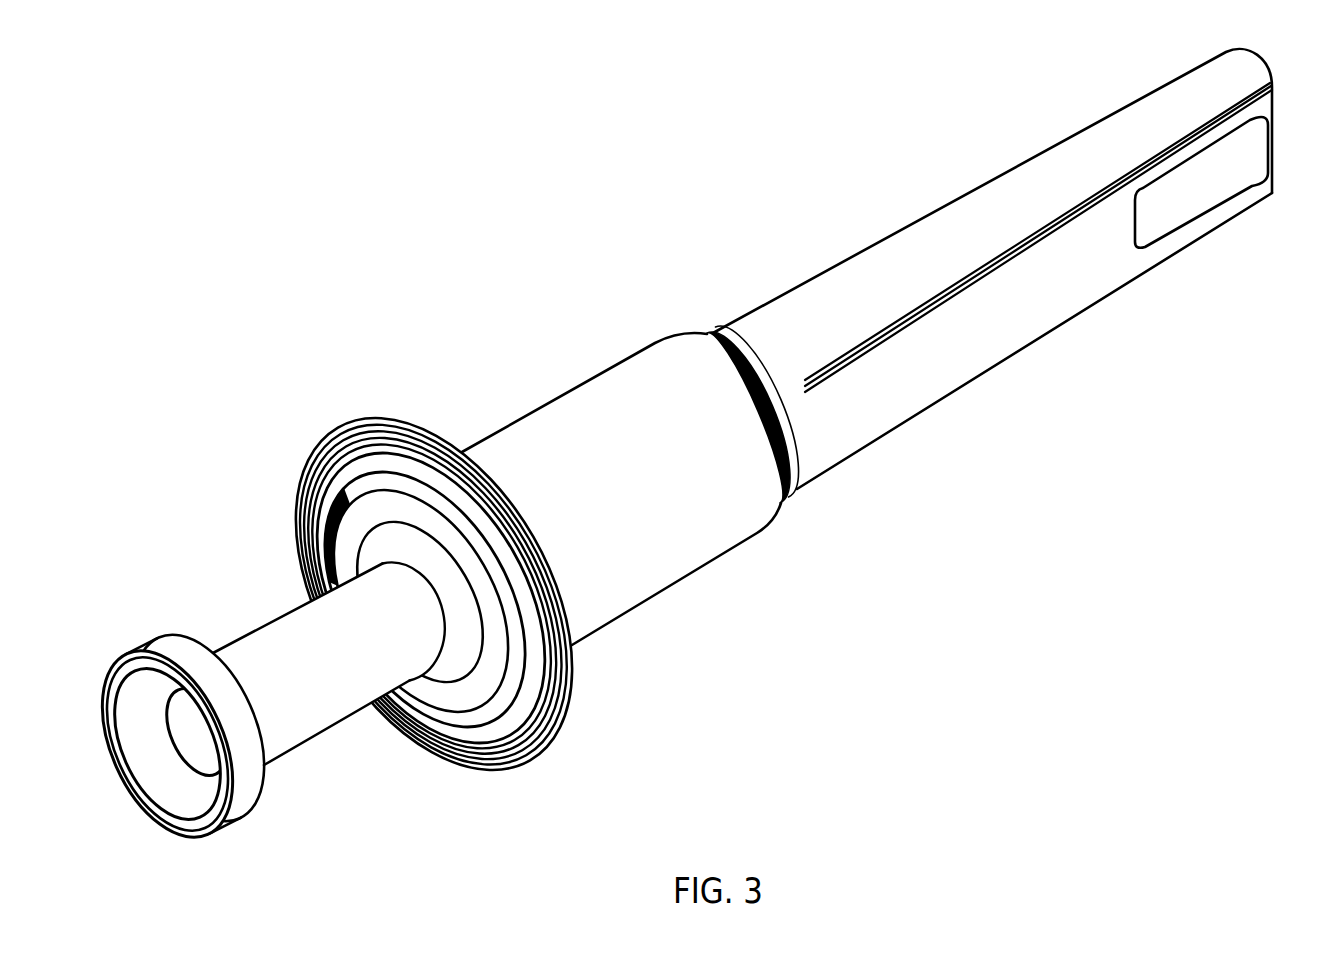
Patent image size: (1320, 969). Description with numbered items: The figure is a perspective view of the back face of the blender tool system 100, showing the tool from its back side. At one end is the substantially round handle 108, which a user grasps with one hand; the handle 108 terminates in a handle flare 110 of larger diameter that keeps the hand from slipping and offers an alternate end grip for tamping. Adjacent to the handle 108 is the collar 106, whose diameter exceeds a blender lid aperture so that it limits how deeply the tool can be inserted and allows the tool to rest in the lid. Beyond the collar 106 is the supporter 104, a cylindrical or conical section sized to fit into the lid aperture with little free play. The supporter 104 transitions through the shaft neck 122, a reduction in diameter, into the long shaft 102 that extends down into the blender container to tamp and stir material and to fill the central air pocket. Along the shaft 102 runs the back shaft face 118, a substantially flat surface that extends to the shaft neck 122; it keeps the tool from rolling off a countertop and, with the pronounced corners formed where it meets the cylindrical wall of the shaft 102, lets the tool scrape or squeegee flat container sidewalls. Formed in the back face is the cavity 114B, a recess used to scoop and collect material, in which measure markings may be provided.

The blender tool system 100 is at (684, 468).
The shaft 102 is at (1002, 269).
The supporter 104 is at (664, 485).
The collar 106 is at (555, 730).
The handle 108 is at (340, 670).
The handle flare 110 is at (250, 765).
The cavity 114B is at (1197, 195).
The back shaft face 118 is at (965, 343).
The shaft neck 122 is at (790, 497).